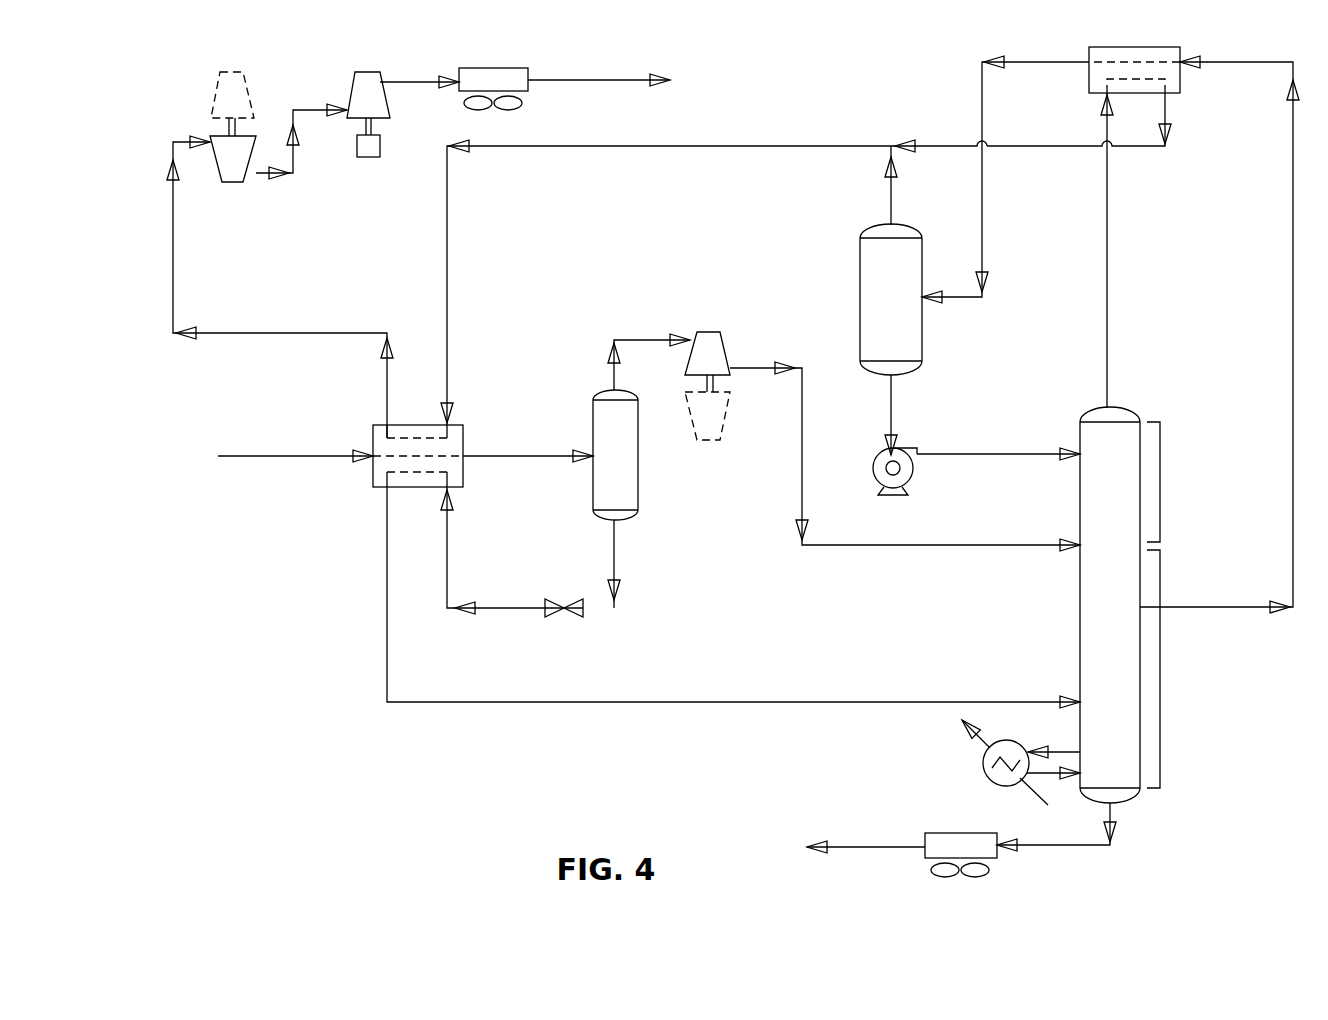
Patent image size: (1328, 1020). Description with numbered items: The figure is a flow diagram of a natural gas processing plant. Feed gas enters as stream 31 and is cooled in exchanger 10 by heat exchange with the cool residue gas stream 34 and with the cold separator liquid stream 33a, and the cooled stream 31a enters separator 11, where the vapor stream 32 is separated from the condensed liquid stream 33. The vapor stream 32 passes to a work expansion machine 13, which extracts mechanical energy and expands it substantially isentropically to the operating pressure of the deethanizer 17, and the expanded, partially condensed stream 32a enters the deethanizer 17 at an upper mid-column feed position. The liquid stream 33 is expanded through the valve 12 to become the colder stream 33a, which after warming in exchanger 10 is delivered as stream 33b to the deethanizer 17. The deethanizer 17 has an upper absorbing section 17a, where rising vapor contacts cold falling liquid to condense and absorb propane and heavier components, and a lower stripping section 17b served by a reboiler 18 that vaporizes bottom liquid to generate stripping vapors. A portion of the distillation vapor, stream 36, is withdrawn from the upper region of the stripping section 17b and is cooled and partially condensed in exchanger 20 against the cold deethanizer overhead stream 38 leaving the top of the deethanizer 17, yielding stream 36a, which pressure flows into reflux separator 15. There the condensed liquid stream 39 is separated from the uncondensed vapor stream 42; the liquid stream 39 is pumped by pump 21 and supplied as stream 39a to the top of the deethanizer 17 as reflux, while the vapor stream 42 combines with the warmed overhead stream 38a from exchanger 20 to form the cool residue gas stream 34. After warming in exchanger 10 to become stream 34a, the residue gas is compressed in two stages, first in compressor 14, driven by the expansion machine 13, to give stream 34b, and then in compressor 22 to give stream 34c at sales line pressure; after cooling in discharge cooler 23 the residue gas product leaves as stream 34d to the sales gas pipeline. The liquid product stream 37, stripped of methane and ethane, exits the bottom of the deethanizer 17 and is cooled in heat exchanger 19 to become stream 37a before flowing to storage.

The heat exchanger 10 is at (417, 425).
The separator 11 is at (640, 487).
The expansion valve 12 is at (550, 600).
The work expansion machine 13 is at (232, 72).
The compressor 14 is at (232, 182).
The reflux separator 15 is at (858, 302).
The deethanizer 17 is at (1080, 640).
The absorbing section 17a is at (1162, 485).
The stripping section 17b is at (1162, 678).
The reboiler 18 is at (982, 765).
The heat exchanger 19 is at (960, 833).
The heat exchanger 20 is at (1135, 95).
The pump 21 is at (877, 484).
The compressor 22 is at (368, 72).
The discharge cooler 23 is at (492, 68).
The feed stream 31 is at (236, 456).
The cooled stream 31a is at (523, 460).
The vapor stream 32 is at (647, 342).
The expanded stream 32a is at (987, 548).
The condensed liquid stream 33 is at (616, 555).
The separator liquids stream 33a is at (495, 612).
The heated liquid stream 33b is at (865, 705).
The cool residue gas stream 34 is at (673, 148).
The warmed residue gas stream 34a is at (263, 335).
The compressed residue gas stream 34b is at (295, 148).
The residue gas stream 34c is at (413, 82).
The residue gas product stream 34d is at (640, 80).
The distillation vapor stream 36 is at (1243, 63).
The cooled distillation vapor stream 36a is at (1043, 63).
The liquid product stream 37 is at (1068, 848).
The cooled liquid product stream 37a is at (868, 850).
The deethanizer overhead stream 38 is at (1110, 347).
The warmed deethanizer overhead stream 38a is at (1043, 148).
The condensed liquid stream 39 is at (889, 417).
The reflux stream 39a is at (985, 458).
The uncondensed vapor stream 42 is at (889, 195).